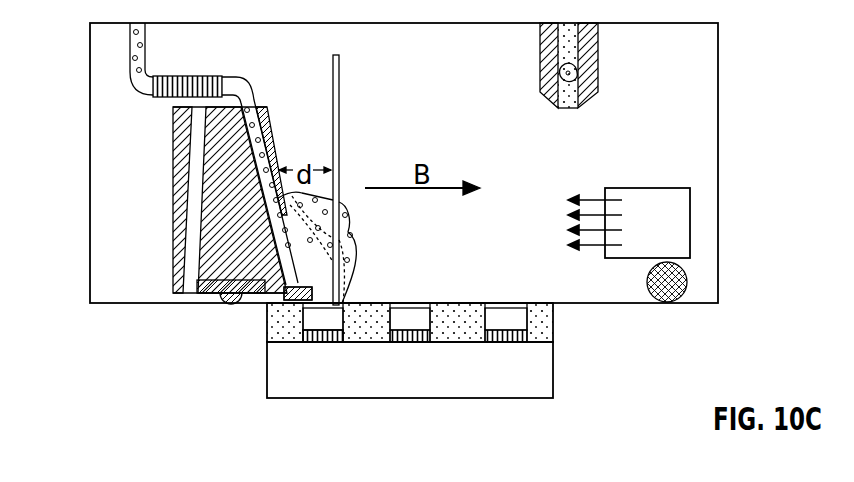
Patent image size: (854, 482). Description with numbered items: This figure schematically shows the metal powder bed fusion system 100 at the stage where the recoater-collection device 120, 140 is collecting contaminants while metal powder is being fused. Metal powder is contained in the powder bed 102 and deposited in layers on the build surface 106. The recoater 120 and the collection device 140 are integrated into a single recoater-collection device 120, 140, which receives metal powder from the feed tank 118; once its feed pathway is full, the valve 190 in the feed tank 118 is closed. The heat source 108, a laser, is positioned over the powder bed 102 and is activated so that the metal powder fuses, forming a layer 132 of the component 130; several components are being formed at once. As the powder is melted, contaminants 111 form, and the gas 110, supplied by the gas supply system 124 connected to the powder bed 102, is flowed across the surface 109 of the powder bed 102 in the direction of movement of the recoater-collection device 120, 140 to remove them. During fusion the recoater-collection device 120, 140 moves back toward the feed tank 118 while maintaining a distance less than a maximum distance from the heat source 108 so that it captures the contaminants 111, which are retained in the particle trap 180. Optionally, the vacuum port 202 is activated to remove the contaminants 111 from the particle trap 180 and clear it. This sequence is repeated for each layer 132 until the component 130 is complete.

The metal powder bed fusion system 100 is at (404, 151).
The powder bed 102 is at (548, 328).
The build surface 106 is at (536, 358).
The heat source 108 is at (340, 133).
The surface 109 is at (542, 303).
The gas 110 is at (593, 198).
The contaminants 111 is at (297, 284).
The feed tank 118 is at (590, 40).
The recoater 120 is at (121, 177).
The gas supply system 124 is at (666, 237).
The component 130 is at (402, 343).
The layer 132 is at (347, 307).
The collection device 140 is at (171, 161).
The particle trap 180 is at (297, 305).
The valve 190 is at (577, 72).
The vacuum port 202 is at (688, 278).